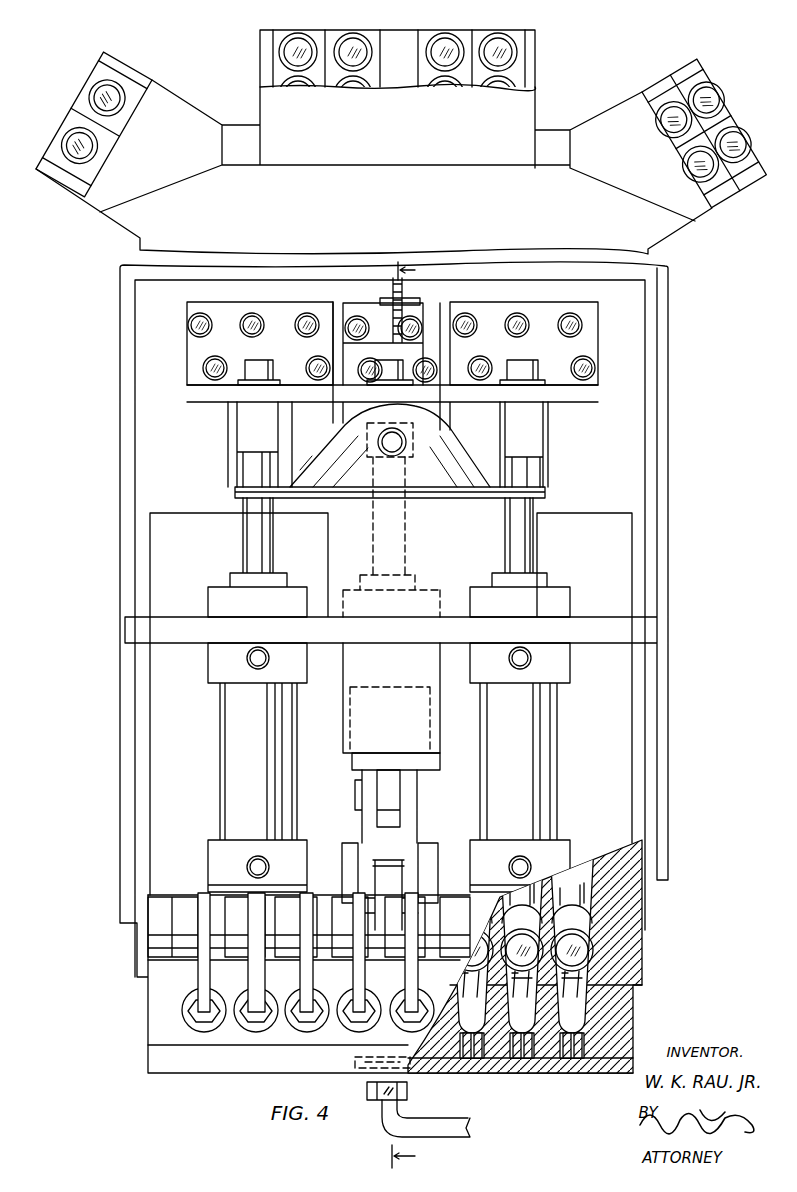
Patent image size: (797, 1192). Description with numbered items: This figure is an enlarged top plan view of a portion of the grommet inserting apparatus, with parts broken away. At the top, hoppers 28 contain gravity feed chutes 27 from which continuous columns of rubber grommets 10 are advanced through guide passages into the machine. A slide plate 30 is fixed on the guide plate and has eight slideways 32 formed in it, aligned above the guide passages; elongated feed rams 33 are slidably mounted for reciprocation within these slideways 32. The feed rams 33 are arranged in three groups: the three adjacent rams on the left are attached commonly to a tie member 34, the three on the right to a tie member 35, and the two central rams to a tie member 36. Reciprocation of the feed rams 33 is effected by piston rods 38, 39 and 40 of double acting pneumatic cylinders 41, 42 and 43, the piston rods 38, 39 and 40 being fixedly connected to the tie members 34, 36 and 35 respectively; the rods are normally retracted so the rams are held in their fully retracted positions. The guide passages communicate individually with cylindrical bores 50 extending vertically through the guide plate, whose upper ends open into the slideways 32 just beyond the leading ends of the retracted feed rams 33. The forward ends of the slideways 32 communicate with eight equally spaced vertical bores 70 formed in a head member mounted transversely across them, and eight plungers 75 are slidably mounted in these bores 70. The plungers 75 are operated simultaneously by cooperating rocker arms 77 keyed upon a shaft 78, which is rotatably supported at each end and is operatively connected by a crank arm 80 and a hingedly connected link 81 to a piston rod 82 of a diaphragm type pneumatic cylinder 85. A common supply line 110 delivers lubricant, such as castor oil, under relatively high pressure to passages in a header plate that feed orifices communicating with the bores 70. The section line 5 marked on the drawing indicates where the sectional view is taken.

The section line 5 is at (412, 715).
The rubber grommet 10 is at (525, 975).
The gravity feed chute 27 is at (133, 92).
The hopper 28 is at (267, 108).
The slide plate 30 is at (644, 953).
The slideway 32 is at (593, 930).
The feed ram 33 is at (518, 893).
The tie member 34 is at (277, 309).
The tie member 35 is at (510, 309).
The tie member 36 is at (425, 309).
The piston rod 38 is at (243, 551).
The piston rod 39 is at (373, 547).
The piston rod 40 is at (505, 550).
The double acting pneumatic cylinder 41 is at (222, 712).
The double acting pneumatic cylinder 42 is at (350, 717).
The double acting pneumatic cylinder 43 is at (487, 715).
The cylindrical bore 50 is at (520, 990).
The bore 70 is at (510, 1010).
The plunger 75 is at (207, 1030).
The rocker arm 77 is at (210, 970).
The shaft 78 is at (325, 958).
The crank arm 80 is at (388, 866).
The link 81 is at (363, 832).
The piston rod 82 is at (365, 757).
The diaphragm type pneumatic cylinder 85 is at (455, 437).
The common supply line 110 is at (440, 1118).